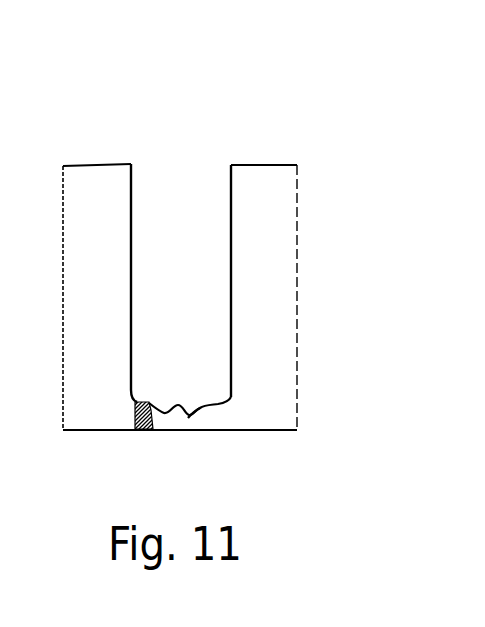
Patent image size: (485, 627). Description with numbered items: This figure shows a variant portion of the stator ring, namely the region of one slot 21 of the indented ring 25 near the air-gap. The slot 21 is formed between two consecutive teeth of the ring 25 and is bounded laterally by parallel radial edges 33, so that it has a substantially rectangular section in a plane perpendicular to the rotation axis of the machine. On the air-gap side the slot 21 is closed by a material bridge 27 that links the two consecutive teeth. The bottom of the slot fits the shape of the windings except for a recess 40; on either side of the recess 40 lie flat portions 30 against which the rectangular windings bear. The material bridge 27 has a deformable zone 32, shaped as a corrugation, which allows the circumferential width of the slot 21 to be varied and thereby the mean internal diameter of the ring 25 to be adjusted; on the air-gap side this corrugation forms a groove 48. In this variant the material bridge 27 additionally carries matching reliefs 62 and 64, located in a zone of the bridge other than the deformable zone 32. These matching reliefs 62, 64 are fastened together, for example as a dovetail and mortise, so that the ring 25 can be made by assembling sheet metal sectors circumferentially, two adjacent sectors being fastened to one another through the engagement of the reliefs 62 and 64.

The slot 21 is at (197, 181).
The indented ring 25 is at (257, 193).
The radial edge 33 is at (231, 251).
The recess 40 is at (188, 415).
The flat portion 30 is at (203, 402).
The matching relief 62 is at (150, 408).
The matching relief 64 is at (168, 405).
The groove 48 is at (178, 419).
The deformable zone 32 is at (183, 418).
The material bridge 27 is at (221, 414).